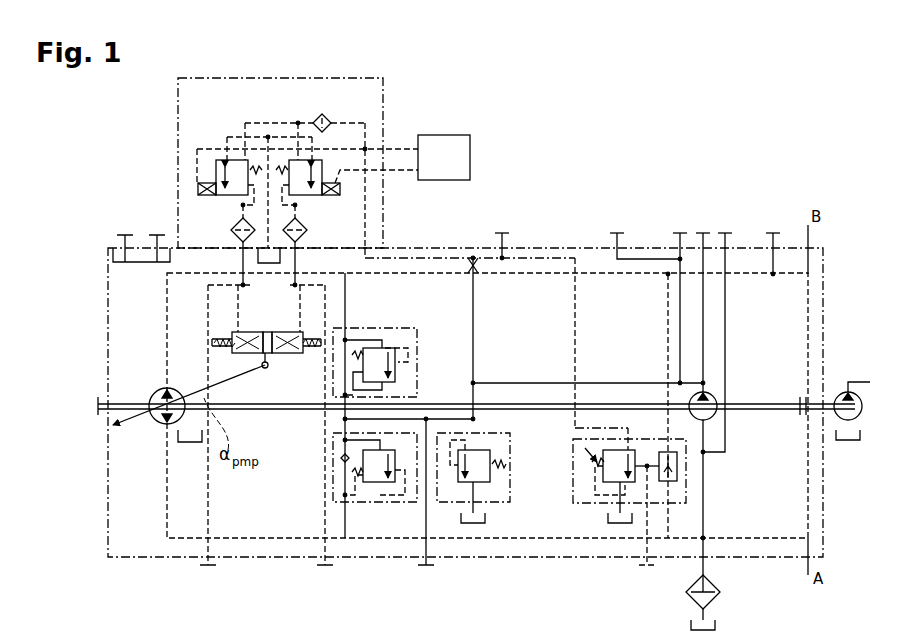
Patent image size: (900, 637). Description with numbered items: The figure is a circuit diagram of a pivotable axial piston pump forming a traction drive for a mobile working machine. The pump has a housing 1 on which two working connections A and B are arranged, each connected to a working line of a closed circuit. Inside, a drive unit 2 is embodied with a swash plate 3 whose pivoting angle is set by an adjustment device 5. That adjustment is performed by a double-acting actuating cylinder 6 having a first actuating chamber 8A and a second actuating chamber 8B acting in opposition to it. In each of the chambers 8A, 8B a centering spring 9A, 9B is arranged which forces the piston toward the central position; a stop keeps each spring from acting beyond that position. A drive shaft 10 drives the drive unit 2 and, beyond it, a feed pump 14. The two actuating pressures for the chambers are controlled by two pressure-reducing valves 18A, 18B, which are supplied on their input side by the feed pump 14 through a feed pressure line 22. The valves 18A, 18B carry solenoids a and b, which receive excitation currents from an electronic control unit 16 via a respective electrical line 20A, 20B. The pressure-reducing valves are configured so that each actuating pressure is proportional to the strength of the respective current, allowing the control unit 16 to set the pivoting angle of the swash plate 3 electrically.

The housing 1 is at (106, 479).
The drive unit 2 is at (155, 392).
The swash plate 3 is at (146, 424).
The adjustment device 5 is at (112, 152).
The double-acting actuating cylinder 6 is at (252, 424).
The first actuating chamber 8A is at (242, 335).
The second actuating chamber 8B is at (292, 356).
The centering spring 9A is at (230, 350).
The centering spring 9B is at (280, 357).
The drive shaft 10 is at (118, 402).
The feed pump 14 is at (714, 416).
The electronic control unit 16 is at (472, 155).
The pressure-reducing valve 18A is at (214, 142).
The pressure-reducing valve 18B is at (331, 140).
The electrical line 20A is at (402, 172).
The electrical line 20B is at (402, 148).
The feed pressure line 22 is at (531, 382).